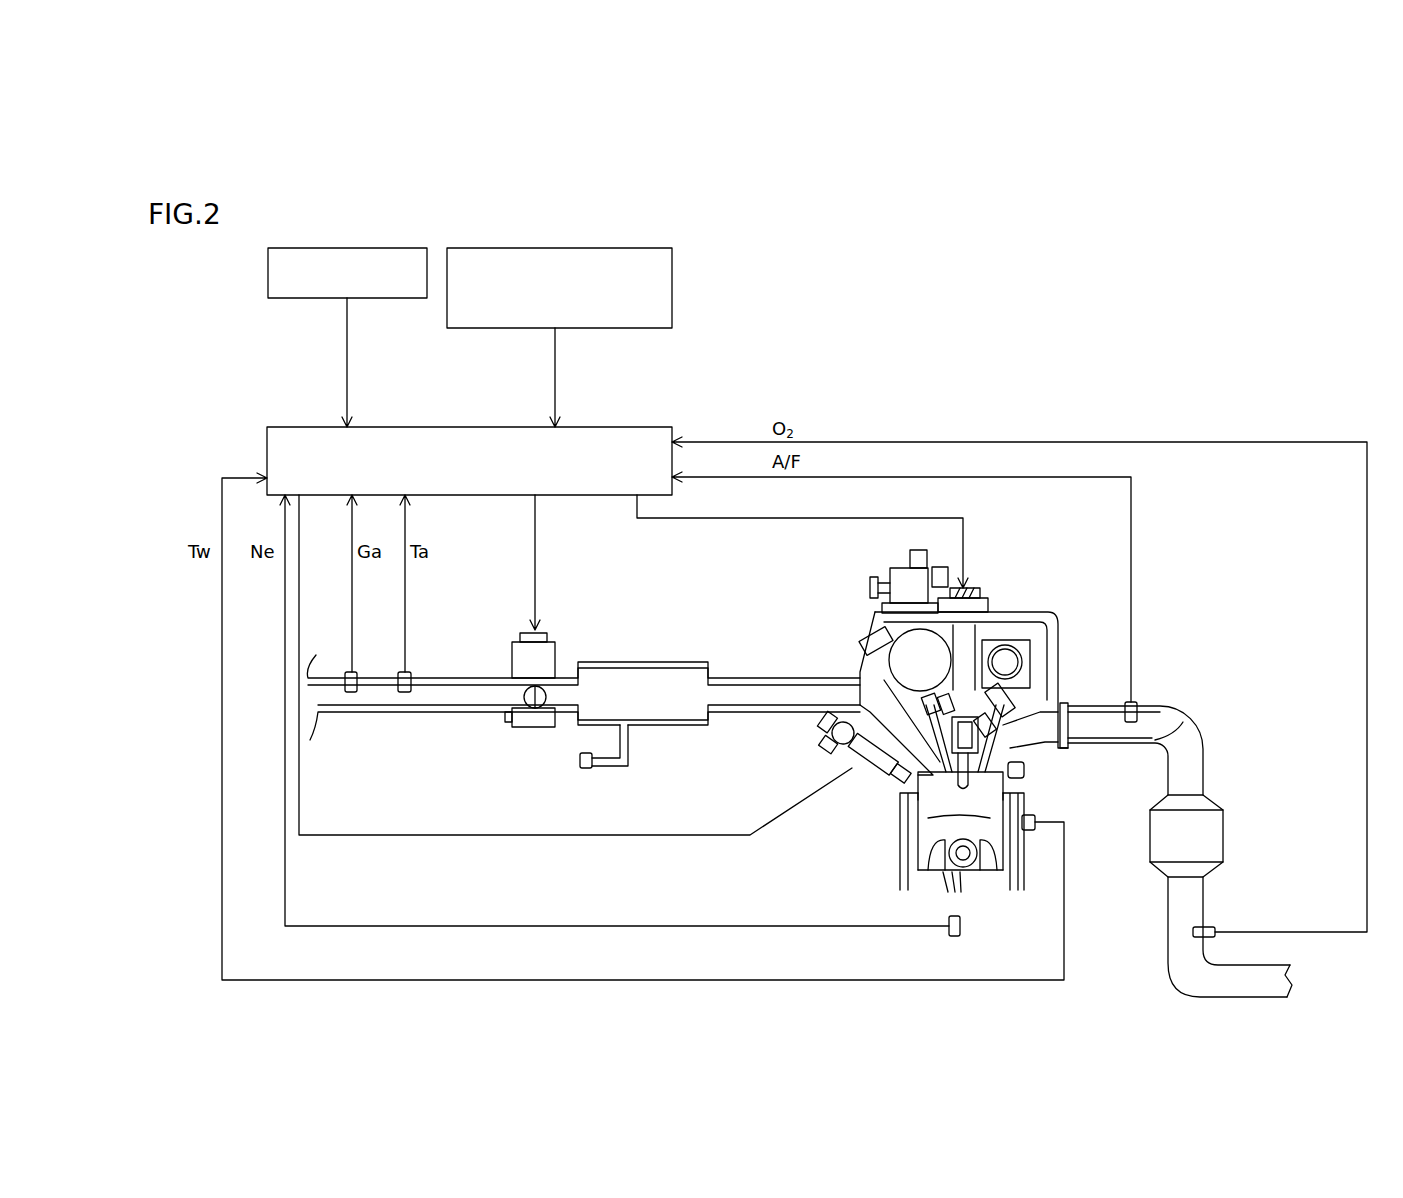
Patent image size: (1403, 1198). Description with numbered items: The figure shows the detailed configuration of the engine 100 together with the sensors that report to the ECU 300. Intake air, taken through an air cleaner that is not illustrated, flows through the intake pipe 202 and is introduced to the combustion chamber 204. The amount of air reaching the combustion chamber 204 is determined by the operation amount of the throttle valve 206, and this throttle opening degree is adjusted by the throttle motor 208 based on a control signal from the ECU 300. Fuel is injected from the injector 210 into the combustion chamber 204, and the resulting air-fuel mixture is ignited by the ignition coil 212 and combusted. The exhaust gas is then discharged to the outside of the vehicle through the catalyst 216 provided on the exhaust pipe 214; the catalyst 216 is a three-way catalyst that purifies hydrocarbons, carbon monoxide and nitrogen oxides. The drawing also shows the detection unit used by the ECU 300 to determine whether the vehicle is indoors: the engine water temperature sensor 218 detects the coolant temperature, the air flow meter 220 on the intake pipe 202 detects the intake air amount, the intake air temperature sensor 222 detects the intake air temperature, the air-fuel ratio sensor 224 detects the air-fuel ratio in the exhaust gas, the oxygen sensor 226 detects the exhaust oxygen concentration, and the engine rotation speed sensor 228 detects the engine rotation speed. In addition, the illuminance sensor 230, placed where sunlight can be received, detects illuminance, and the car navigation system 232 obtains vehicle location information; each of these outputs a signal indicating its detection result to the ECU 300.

The engine 100 is at (834, 855).
The intake pipe 202 is at (680, 726).
The combustion chamber 204 is at (990, 797).
The throttle valve 206 is at (522, 703).
The throttle motor 208 is at (556, 648).
The injector 210 is at (892, 765).
The ignition coil 212 is at (975, 588).
The exhaust pipe 214 is at (1176, 706).
The catalyst 216 is at (1226, 829).
The engine water temperature sensor 218 is at (1040, 818).
The air flow meter 220 is at (345, 676).
The intake air temperature sensor 222 is at (398, 676).
The air-fuel ratio sensor 224 is at (1122, 703).
The oxygen sensor 226 is at (1212, 927).
The engine rotation speed sensor 228 is at (962, 928).
The illuminance sensor 230 is at (366, 249).
The car navigation system 232 is at (611, 249).
The ECU 300 is at (648, 426).